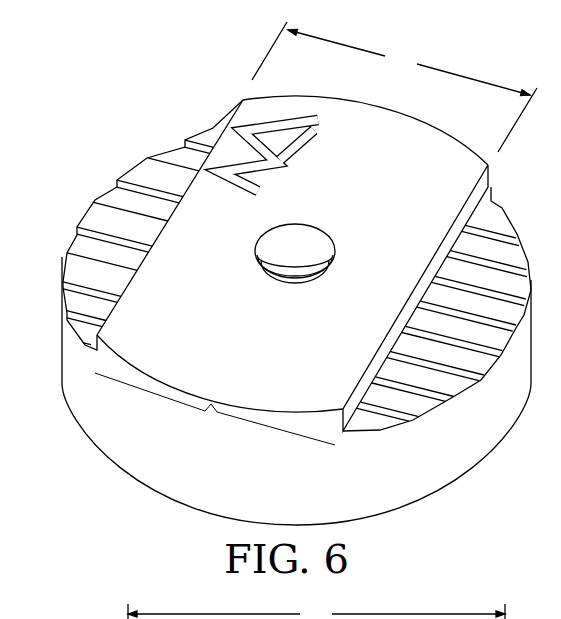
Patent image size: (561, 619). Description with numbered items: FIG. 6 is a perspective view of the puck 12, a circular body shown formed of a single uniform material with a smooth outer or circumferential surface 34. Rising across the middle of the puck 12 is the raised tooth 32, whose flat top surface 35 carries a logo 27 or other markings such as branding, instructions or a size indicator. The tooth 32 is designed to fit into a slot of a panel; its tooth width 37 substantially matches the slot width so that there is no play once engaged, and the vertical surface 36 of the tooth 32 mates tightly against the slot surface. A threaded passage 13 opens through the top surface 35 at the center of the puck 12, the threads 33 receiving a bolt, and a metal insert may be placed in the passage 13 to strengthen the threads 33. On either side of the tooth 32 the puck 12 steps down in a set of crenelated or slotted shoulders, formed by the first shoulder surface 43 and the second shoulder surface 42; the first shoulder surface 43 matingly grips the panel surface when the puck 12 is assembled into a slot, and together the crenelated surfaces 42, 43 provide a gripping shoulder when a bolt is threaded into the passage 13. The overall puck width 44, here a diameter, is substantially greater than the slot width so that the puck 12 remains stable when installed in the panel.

The puck 12 is at (150, 125).
The passage 13 is at (299, 251).
The logo 27 is at (311, 119).
The raised tooth 32 is at (215, 409).
The threads 33 is at (272, 240).
The outer surface 34 is at (270, 479).
The top surface 35 is at (403, 146).
The vertical surface 36 is at (354, 412).
The tooth width 37 is at (394, 87).
The second shoulder surface 42 is at (462, 384).
The first shoulder surface 43 is at (430, 398).
The puck width 44 is at (316, 610).